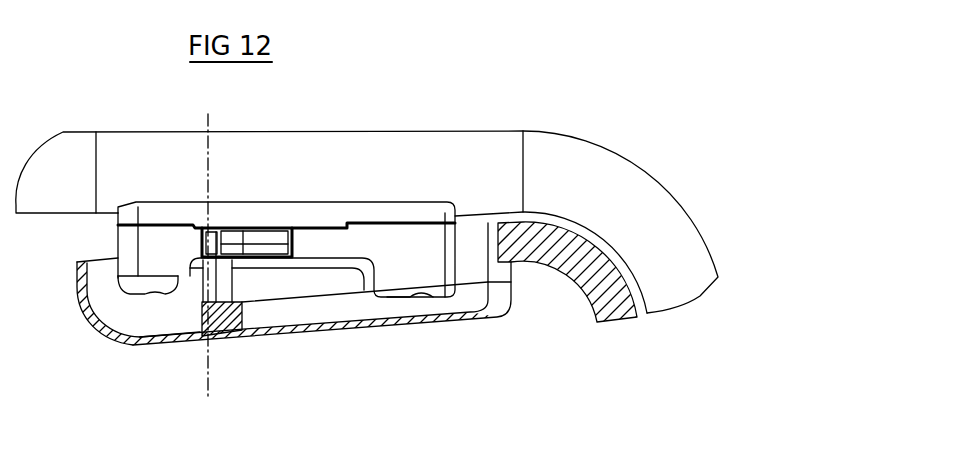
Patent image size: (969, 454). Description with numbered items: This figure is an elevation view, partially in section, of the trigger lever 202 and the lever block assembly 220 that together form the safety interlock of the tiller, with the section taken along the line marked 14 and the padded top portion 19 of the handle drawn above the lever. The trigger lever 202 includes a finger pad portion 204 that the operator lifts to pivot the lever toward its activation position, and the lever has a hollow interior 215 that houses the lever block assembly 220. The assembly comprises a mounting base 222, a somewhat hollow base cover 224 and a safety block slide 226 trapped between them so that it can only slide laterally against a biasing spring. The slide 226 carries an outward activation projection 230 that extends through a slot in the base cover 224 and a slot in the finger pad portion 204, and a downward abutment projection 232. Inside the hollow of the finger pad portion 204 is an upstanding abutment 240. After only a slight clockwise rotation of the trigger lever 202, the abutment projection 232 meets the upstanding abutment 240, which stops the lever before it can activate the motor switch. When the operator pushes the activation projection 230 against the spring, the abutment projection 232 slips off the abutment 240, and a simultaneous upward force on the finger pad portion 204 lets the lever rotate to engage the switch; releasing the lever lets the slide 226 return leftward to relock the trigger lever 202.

The main housing 14 is at (188, 114).
The top portion 19 is at (317, 152).
The trigger lever 202 is at (422, 338).
The finger pad portion 204 is at (120, 347).
The hollow interior 215 is at (180, 317).
The lever block assembly 220 is at (400, 305).
The mounting base 222 is at (373, 207).
The base cover 224 is at (427, 247).
The safety block slide 226 is at (257, 232).
The outward activation projection 230 is at (221, 237).
The downward abutment projection 232 is at (227, 283).
The upstanding abutment 240 is at (233, 323).